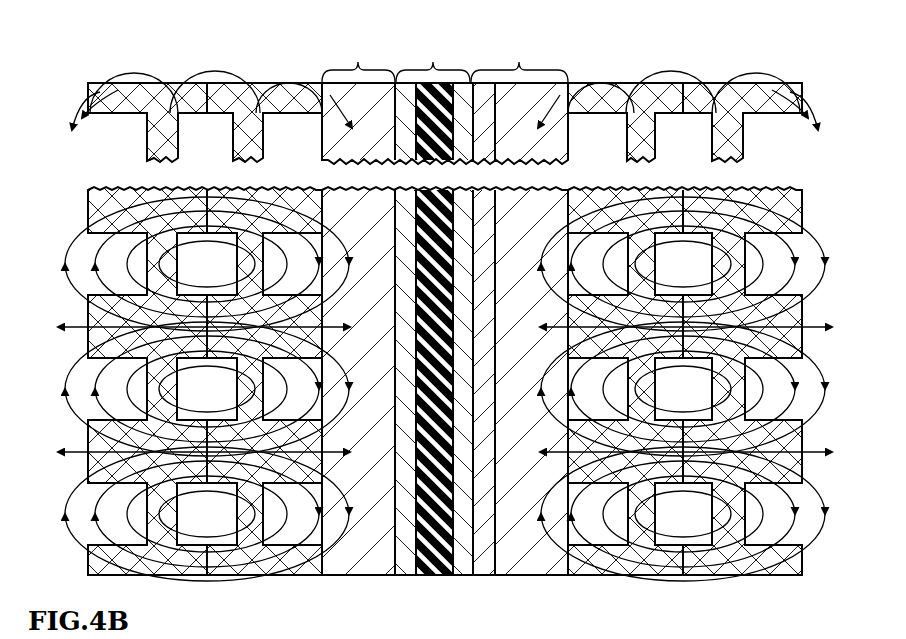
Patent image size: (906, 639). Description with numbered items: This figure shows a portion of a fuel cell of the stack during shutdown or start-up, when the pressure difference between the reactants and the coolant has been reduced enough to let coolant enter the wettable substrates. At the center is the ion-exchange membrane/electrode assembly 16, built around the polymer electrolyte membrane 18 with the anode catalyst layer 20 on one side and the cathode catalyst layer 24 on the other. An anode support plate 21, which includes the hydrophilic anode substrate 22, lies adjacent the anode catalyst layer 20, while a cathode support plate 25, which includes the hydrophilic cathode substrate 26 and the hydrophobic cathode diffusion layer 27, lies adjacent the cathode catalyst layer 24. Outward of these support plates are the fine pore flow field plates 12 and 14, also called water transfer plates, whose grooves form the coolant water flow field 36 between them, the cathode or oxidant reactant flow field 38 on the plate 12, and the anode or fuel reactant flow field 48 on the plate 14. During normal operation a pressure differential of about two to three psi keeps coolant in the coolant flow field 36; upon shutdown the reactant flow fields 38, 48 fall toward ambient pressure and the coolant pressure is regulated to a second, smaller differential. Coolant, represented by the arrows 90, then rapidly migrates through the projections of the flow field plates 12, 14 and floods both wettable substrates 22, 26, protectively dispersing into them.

The flow field plate 12 is at (165, 78).
The flow field plate 14 is at (282, 78).
The ion-exchange membrane/electrode assembly 16 is at (433, 57).
The polymer electrolyte membrane 18 is at (440, 560).
The anode catalyst layer 20 is at (407, 560).
The anode support plate 21 is at (358, 56).
The hydrophilic anode substrate 22 is at (375, 560).
The cathode catalyst layer 24 is at (462, 560).
The cathode support plate 25 is at (519, 56).
The hydrophilic cathode substrate 26 is at (522, 555).
The hydrophobic cathode diffusion layer 27 is at (487, 560).
The coolant water flow field 36 is at (220, 146).
The cathode or oxidant reactant flow field 38 is at (610, 146).
The anode or fuel reactant flow field 48 is at (303, 146).
The coolant arrows 90 is at (88, 90).